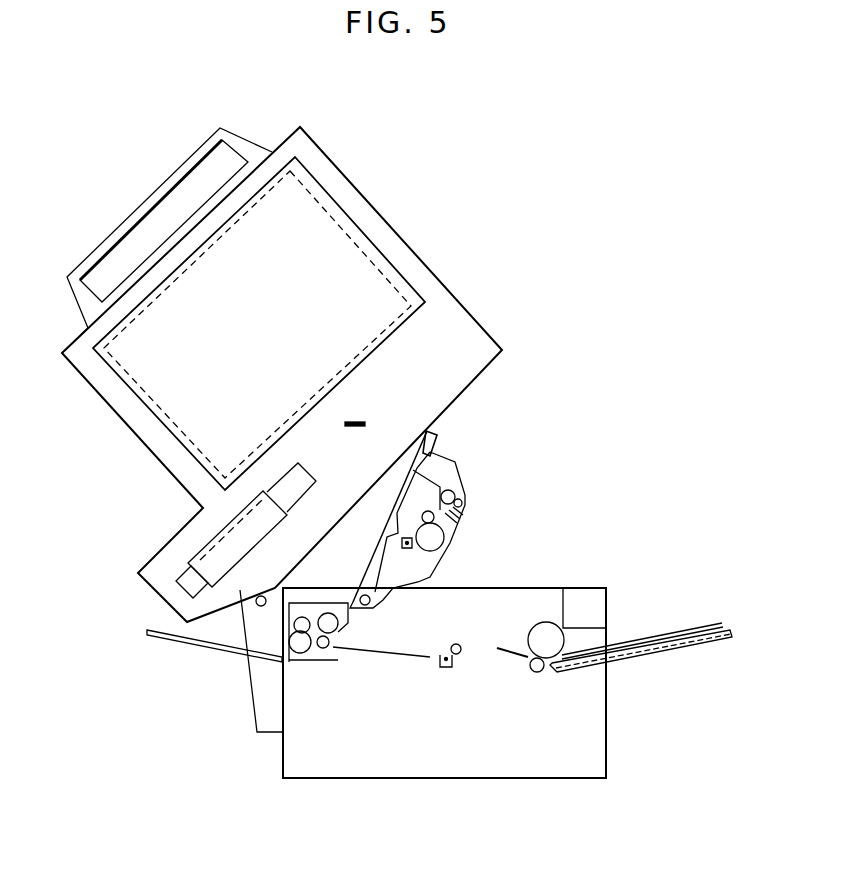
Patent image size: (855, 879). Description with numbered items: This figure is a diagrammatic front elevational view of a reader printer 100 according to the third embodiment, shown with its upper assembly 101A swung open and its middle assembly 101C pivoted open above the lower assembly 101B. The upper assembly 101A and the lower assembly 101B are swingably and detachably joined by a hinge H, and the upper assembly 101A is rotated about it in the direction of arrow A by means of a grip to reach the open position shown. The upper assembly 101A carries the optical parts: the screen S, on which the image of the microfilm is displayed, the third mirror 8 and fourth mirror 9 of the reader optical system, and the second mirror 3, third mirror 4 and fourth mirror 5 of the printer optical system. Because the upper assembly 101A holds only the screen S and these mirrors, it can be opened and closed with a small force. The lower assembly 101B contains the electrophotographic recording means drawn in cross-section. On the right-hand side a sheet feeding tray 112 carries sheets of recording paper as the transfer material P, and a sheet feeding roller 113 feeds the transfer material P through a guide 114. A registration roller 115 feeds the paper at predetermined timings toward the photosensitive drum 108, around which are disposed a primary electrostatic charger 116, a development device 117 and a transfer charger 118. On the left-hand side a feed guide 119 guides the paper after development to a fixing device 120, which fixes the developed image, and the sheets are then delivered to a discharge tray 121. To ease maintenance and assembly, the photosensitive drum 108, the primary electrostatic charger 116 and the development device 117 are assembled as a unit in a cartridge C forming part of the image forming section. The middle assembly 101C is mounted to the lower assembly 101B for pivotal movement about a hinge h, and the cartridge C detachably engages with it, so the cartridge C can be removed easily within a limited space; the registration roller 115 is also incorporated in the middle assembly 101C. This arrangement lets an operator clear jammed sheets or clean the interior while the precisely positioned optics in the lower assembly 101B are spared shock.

The reader printer 100 is at (583, 207).
The upper assembly 101A is at (442, 280).
The lower assembly 101B is at (588, 782).
The middle assembly 101C is at (437, 442).
The screen S is at (342, 207).
The fourth mirror 9 is at (370, 260).
The third mirror 8 is at (227, 158).
The fourth mirror 5 is at (362, 417).
The second mirror 3 is at (210, 540).
The third mirror 4 is at (185, 593).
The cartridge C is at (423, 485).
The registration roller 115 is at (453, 488).
The development device 117 is at (462, 517).
The photosensitive drum 108 is at (443, 542).
The primary electrostatic charger 116 is at (407, 550).
The sheet feeding roller 113 is at (550, 620).
The sheet feeding tray 112 is at (668, 650).
The transfer material P is at (645, 633).
The guide 114 is at (515, 660).
The transfer charger 118 is at (447, 670).
The feed guide 119 is at (402, 657).
The fixing device 120 is at (310, 655).
The discharge tray 121 is at (185, 647).
The hinge H is at (260, 607).
The hinge h is at (363, 606).
The arrow A is at (667, 443).